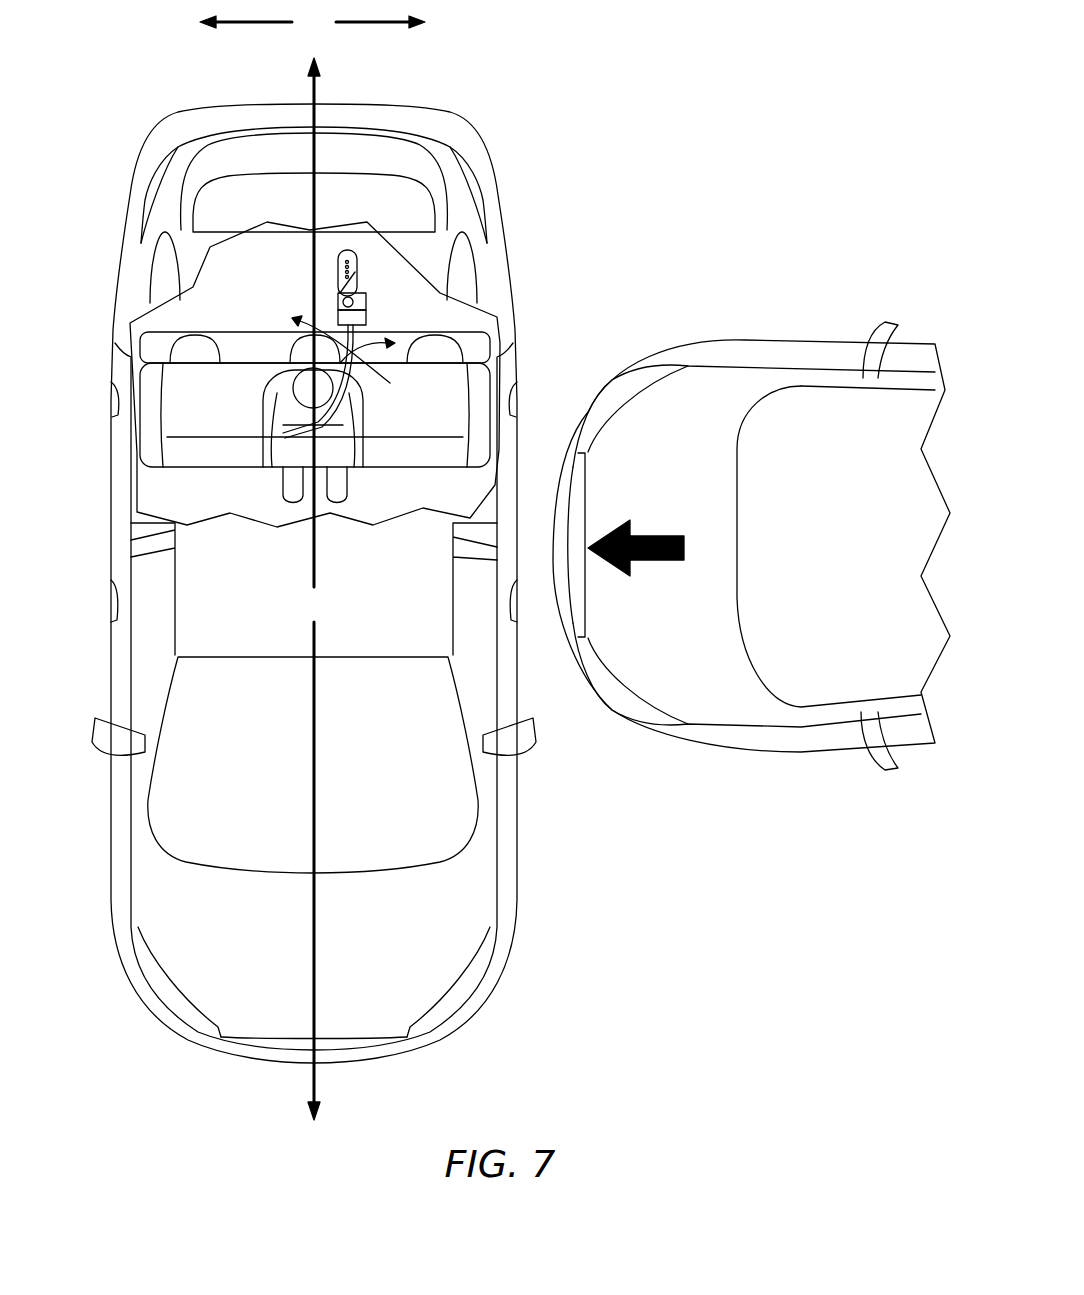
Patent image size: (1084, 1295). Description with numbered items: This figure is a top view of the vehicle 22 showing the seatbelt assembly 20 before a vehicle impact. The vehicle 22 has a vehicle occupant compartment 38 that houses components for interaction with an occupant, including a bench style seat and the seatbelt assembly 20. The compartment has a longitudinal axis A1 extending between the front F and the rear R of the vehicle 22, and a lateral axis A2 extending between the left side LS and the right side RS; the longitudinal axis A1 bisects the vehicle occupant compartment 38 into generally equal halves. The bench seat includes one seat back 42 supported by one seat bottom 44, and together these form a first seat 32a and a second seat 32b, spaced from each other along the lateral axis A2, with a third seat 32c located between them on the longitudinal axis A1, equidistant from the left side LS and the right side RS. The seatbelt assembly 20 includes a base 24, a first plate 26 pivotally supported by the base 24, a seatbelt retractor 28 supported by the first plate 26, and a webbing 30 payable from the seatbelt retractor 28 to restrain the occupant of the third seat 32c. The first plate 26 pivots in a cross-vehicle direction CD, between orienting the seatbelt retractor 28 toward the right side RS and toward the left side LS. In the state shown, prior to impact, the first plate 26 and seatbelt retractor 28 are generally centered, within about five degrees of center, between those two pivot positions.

The seatbelt assembly 20 is at (338, 285).
The vehicle 22 is at (410, 945).
The base 24 is at (357, 279).
The first plate 26 is at (367, 303).
The seatbelt retractor 28 is at (367, 316).
The webbing 30 is at (350, 393).
The first seat 32a is at (203, 400).
The second seat 32b is at (433, 400).
The third seat 32c is at (287, 345).
The vehicle occupant compartment 38 is at (387, 492).
The seat back 42 is at (248, 343).
The seat bottom 44 is at (240, 453).
The longitudinal axis A1 is at (312, 589).
The lateral axis A2 is at (312, 22).
The cross-vehicle direction CD is at (357, 358).
The rear R is at (272, 104).
The front F is at (276, 1064).
The right side RS is at (110, 812).
The left side LS is at (520, 812).